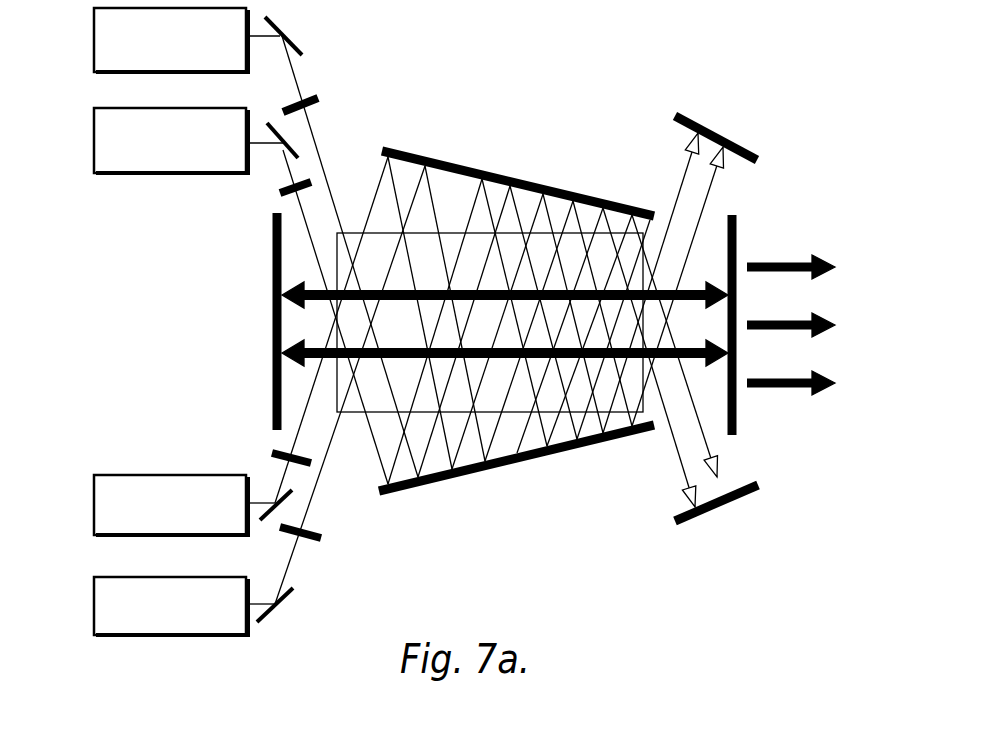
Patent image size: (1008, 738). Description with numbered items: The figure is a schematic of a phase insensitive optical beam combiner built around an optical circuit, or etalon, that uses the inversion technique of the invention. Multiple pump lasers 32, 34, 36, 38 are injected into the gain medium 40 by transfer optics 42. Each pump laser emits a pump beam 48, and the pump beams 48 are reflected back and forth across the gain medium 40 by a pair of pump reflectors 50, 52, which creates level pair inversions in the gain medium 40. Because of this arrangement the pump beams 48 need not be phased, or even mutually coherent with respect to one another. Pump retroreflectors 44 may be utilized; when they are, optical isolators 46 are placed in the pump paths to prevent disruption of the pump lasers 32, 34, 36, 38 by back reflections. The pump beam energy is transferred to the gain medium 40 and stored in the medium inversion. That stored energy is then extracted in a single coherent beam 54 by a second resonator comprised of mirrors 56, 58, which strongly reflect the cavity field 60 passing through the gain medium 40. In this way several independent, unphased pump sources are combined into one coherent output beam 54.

The pump laser 32 is at (94, 36).
The pump laser 34 is at (94, 144).
The pump laser 36 is at (94, 506).
The pump laser 38 is at (94, 606).
The gain medium 40 is at (355, 412).
The transfer optics 42 is at (284, 30).
The pump retroreflector 44 is at (718, 132).
The optical isolator 46 is at (318, 99).
The pump beam 48 is at (413, 203).
The pump reflector 50 is at (492, 461).
The pump reflector 52 is at (470, 163).
The single coherent beam 54 is at (766, 262).
The mirror 56 is at (737, 222).
The mirror 58 is at (272, 262).
The cavity field 60 is at (330, 350).